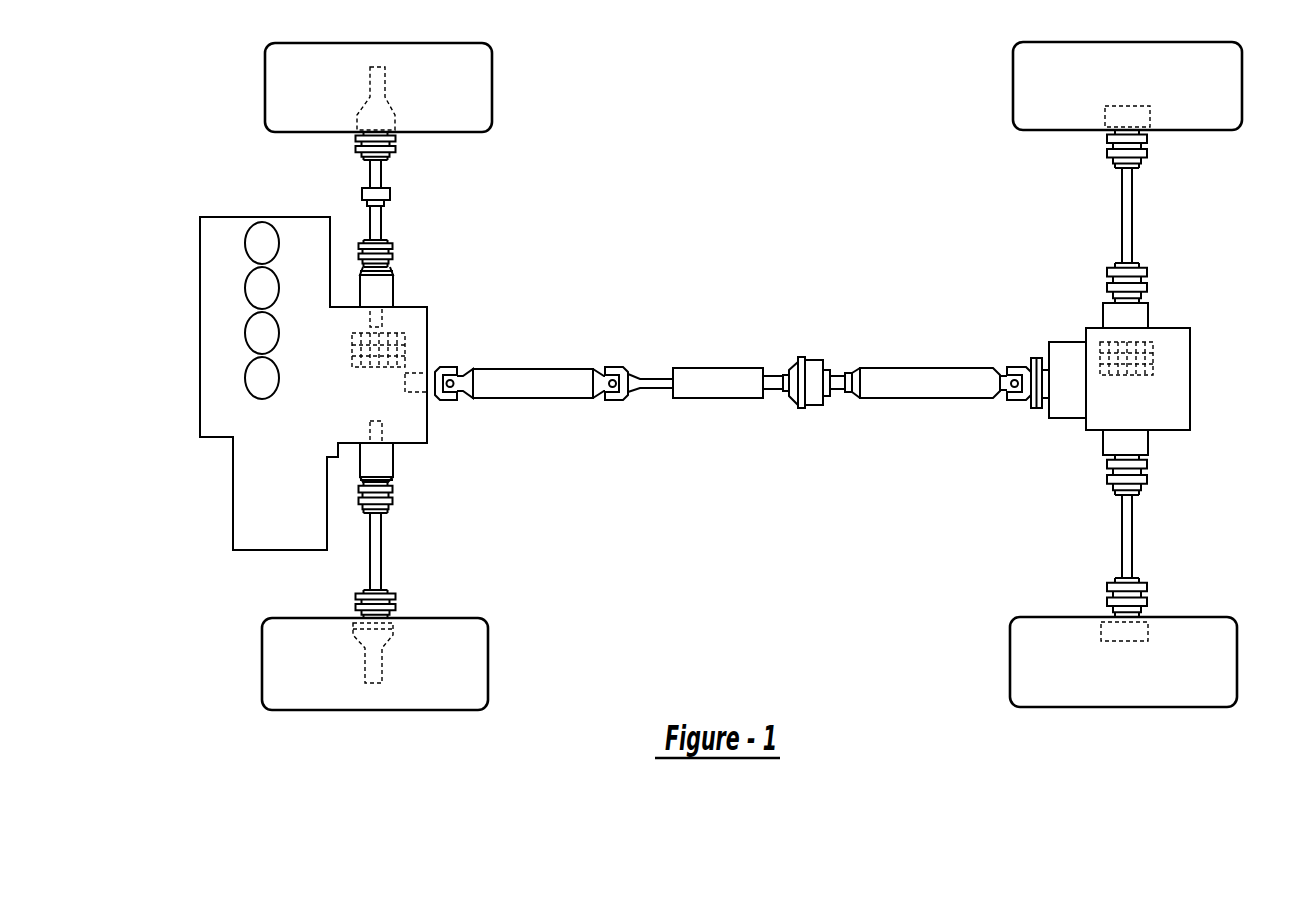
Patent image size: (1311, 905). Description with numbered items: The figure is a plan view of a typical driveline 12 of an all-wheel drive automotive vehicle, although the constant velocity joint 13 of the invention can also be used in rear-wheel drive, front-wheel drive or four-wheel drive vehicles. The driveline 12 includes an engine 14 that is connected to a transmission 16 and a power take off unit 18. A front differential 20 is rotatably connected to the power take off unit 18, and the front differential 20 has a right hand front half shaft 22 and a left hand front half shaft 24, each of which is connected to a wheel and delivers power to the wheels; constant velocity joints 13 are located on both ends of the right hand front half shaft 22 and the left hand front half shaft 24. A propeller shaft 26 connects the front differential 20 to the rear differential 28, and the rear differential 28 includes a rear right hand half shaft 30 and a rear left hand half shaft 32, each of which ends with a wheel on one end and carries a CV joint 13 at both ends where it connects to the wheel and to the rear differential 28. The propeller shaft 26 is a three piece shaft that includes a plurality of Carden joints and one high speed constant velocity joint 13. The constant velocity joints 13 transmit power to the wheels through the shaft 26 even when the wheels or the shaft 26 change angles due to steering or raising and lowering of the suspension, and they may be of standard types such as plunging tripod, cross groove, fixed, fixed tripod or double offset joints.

The driveline 12 is at (725, 142).
The constant velocity joint 13 is at (818, 352).
The engine 14 is at (218, 268).
The transmission 16 is at (253, 482).
The power take off unit 18 is at (412, 328).
The front differential 20 is at (410, 417).
The right hand front half shaft 22 is at (382, 222).
The left hand front half shaft 24 is at (382, 535).
The propeller shaft 26 is at (728, 403).
The rear differential 28 is at (1190, 362).
The rear right hand half shaft 30 is at (1132, 215).
The rear left hand half shaft 32 is at (1132, 527).